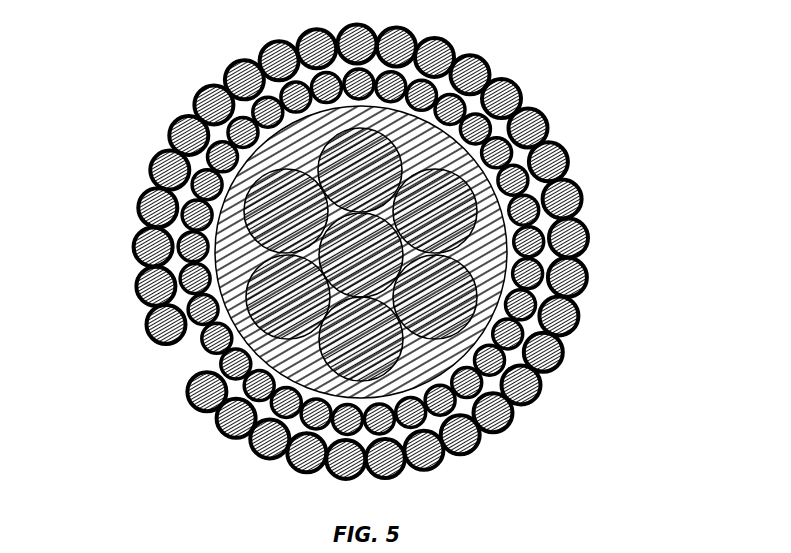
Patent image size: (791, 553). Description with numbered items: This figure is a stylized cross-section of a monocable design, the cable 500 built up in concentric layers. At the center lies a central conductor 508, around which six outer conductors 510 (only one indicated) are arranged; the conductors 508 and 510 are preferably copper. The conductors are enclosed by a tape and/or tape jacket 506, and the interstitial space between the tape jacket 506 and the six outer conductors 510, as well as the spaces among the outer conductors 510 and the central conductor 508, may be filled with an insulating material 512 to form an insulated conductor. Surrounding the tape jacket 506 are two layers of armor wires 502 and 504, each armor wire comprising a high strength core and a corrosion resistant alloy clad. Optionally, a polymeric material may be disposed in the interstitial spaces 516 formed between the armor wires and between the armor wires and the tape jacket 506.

The cable 500 is at (126, 70).
The armor wire layer 502 is at (475, 53).
The armor wire layer 504 is at (506, 406).
The tape jacket 506 is at (583, 237).
The central conductor 508 is at (503, 300).
The outer conductor 510 is at (203, 293).
The insulating material 512 is at (283, 385).
The interstitial spaces 516 is at (160, 367).